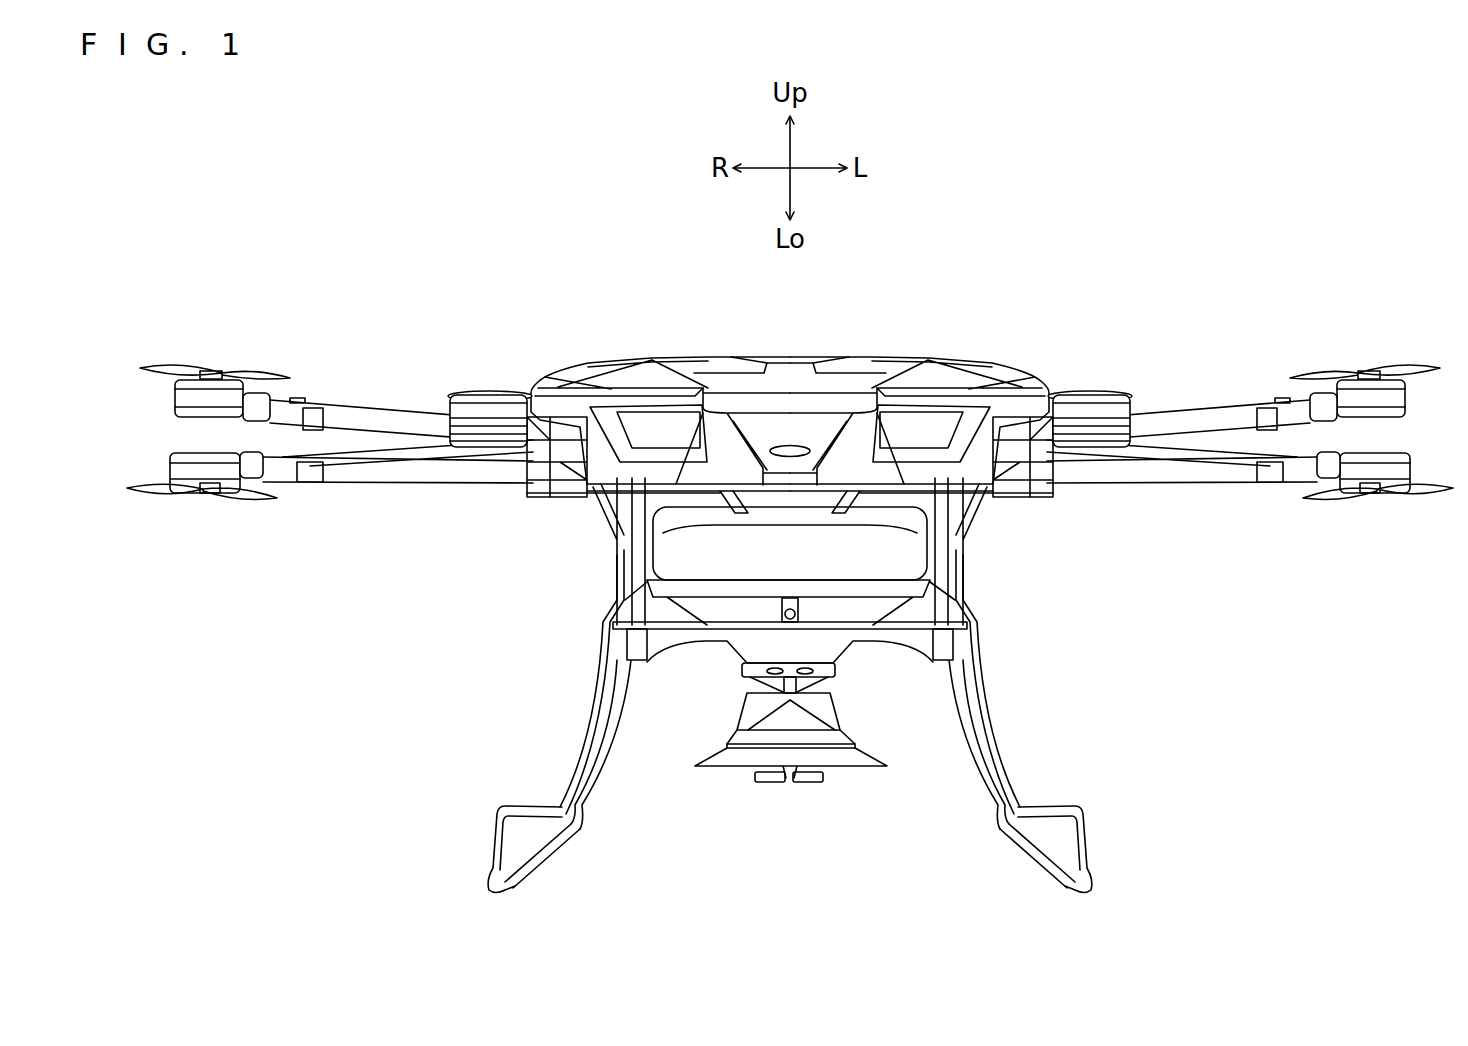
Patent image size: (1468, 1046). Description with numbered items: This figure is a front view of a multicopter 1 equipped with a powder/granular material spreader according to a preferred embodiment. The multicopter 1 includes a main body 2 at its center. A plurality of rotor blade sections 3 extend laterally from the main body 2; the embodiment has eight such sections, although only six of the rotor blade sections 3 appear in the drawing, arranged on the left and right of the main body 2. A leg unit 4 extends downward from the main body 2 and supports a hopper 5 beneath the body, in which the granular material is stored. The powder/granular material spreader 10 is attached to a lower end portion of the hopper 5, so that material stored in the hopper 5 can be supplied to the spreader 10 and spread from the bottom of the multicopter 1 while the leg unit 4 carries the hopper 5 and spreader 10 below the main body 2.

The multicopter 1 is at (608, 311).
The main body 2 is at (884, 352).
The rotor blade sections 3 is at (248, 366).
The leg unit 4 is at (980, 691).
The hopper 5 is at (677, 563).
The powder/granular material spreader 10 is at (688, 796).